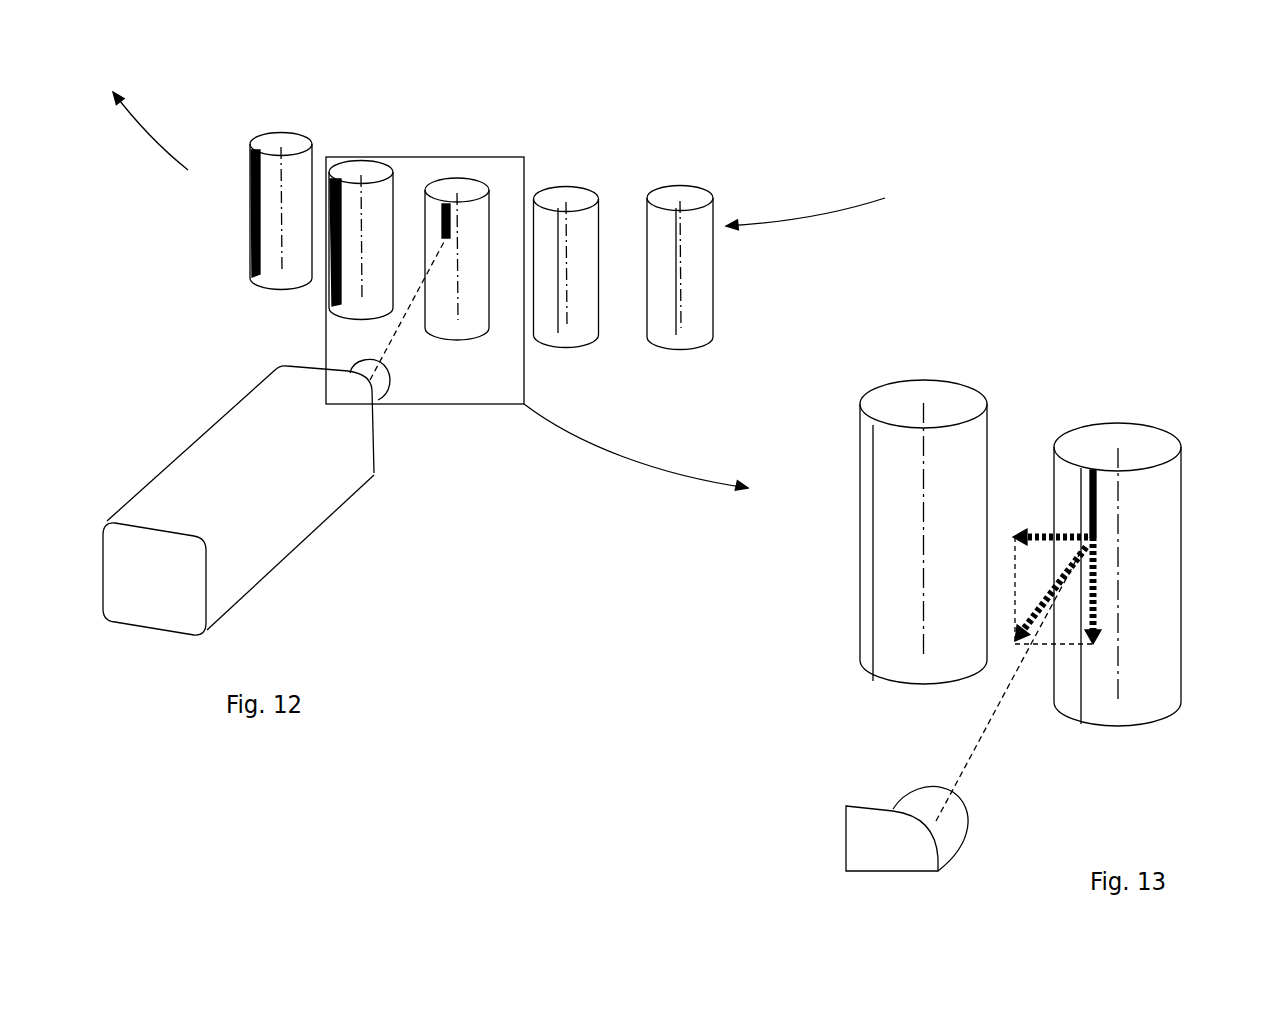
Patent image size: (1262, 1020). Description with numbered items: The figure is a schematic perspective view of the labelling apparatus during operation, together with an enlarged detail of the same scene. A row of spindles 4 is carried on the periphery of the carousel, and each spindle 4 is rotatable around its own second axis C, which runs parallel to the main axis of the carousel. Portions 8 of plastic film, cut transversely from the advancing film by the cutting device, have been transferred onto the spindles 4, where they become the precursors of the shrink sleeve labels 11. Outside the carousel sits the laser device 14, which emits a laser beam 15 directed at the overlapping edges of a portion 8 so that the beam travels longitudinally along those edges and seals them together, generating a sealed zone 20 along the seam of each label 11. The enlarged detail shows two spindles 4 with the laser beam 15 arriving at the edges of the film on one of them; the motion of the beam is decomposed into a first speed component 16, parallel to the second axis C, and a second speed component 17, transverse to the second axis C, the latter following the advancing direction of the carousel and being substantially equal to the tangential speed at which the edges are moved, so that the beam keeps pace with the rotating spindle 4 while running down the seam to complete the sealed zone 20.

In FIG. 13, the spindle 4 is at (889, 359).
In FIG. 12, the portion of plastic film 8 is at (573, 176).
In FIG. 12, the shrink sleeve label 11 is at (300, 129).
In FIG. 12, the laser device 14 is at (351, 537).
In FIG. 13, the laser device 14 is at (772, 819).
In FIG. 12, the laser beam 15 is at (384, 332).
In FIG. 13, the laser beam 15 is at (980, 722).
In FIG. 13, the first speed component 16 is at (1088, 591).
In FIG. 13, the second speed component 17 is at (1033, 524).
In FIG. 12, the sealed zone 20 is at (240, 179).
In FIG. 13, the second axis C is at (916, 417).